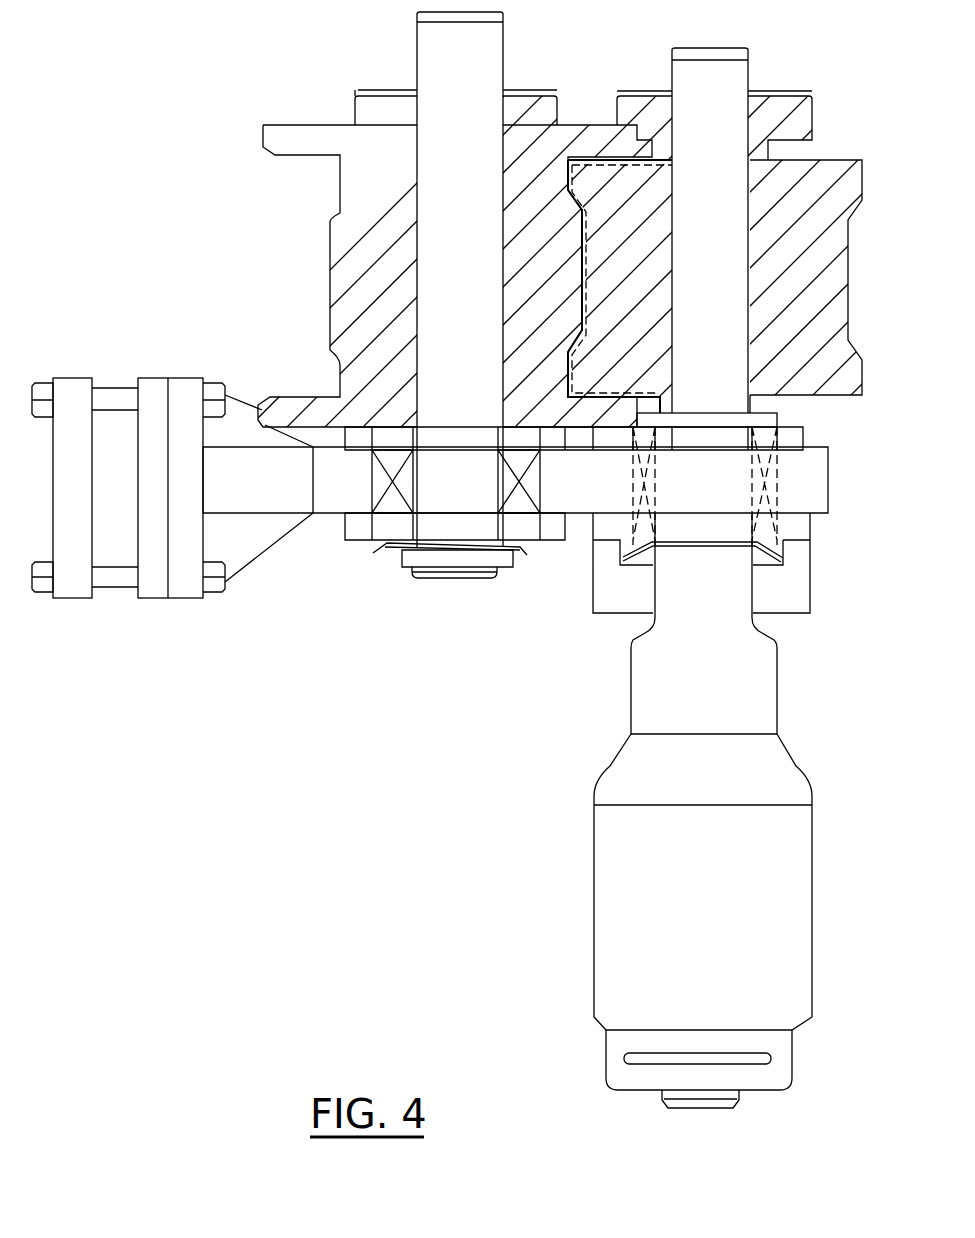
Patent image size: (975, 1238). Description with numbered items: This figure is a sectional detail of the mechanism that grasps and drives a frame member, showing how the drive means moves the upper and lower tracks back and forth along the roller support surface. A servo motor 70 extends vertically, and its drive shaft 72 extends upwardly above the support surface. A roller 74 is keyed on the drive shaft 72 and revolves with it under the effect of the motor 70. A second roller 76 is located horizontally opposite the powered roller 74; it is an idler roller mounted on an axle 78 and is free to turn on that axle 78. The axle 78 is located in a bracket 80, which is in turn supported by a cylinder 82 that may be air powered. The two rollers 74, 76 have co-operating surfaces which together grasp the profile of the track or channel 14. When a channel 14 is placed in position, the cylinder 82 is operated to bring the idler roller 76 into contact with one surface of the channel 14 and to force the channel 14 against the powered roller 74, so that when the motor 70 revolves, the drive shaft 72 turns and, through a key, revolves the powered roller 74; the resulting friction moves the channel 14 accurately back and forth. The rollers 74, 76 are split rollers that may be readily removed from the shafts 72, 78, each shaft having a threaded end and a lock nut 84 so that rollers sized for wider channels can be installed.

The channel 14 is at (575, 157).
The servo motor 70 is at (781, 893).
The drive shaft 72 is at (685, 87).
The roller 74 is at (822, 245).
The second roller 76 is at (360, 248).
The axle 78 is at (447, 576).
The bracket 80 is at (313, 517).
The cylinder 82 is at (113, 547).
The lock nut 84 is at (368, 102).